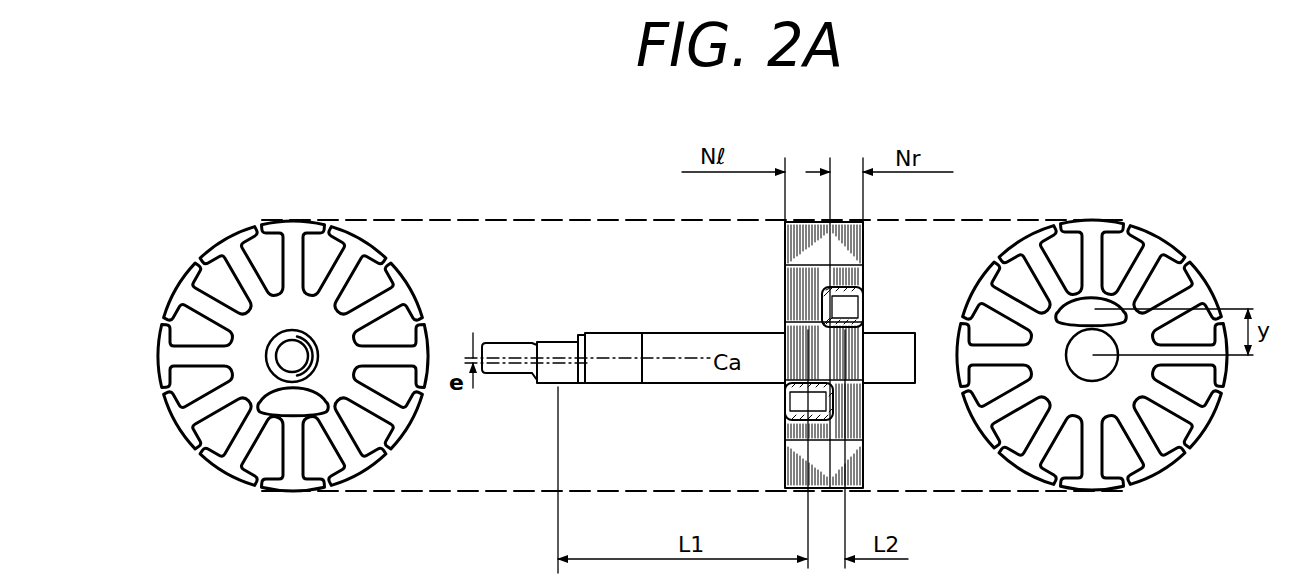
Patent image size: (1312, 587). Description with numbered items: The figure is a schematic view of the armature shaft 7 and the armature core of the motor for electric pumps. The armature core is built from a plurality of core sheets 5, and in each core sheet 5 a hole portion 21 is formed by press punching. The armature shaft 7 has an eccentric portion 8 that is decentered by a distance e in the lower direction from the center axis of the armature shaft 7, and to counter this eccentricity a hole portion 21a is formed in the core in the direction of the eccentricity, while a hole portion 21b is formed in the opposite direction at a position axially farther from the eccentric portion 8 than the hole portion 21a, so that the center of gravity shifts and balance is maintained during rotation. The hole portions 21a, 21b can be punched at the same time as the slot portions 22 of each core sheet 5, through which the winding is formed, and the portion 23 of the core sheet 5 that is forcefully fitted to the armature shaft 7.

The core sheet 5 is at (699, 362).
The armature shaft 7 is at (692, 370).
The eccentric portion 8 is at (556, 348).
The hole portion 21 is at (273, 404).
The hole portion 21a is at (785, 402).
The hole portion 21b is at (858, 307).
The slot portion 22 is at (265, 256).
The portion meant to be forcefully fit to armature shaft 23 is at (266, 352).